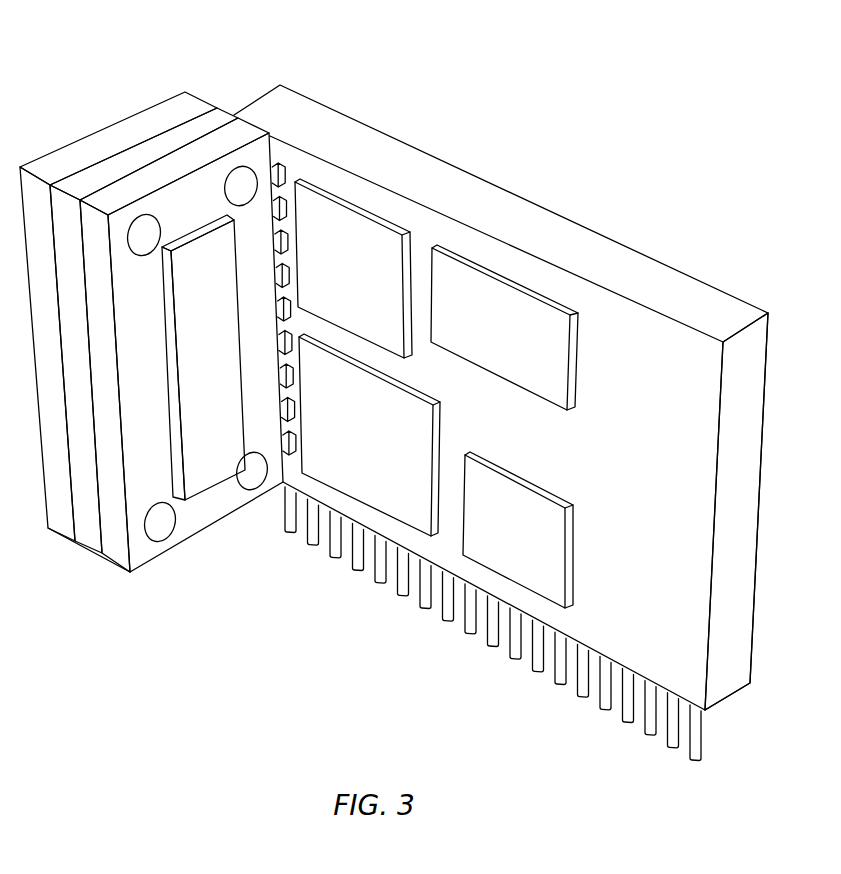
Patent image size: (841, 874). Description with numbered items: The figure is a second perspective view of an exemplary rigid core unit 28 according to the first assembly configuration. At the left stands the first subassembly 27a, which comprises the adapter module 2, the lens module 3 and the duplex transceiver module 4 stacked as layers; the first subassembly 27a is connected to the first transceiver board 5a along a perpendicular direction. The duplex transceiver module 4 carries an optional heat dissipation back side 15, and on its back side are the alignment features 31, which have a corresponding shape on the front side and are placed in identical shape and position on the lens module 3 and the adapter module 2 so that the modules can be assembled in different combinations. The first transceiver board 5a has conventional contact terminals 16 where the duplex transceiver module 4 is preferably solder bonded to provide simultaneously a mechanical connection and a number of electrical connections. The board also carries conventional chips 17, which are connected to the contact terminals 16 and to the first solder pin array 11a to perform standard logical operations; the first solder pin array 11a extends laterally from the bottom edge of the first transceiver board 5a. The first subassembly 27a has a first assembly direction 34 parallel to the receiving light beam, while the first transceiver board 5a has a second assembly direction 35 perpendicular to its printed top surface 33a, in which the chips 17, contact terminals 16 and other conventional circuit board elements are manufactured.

The adapter module 2 is at (190, 104).
The lens module 3 is at (216, 115).
The duplex transceiver module 4 is at (243, 133).
The alignment features 31 is at (155, 226).
The heat dissipation back side 15 is at (187, 349).
The contact terminals 16 is at (276, 179).
The first subassembly 27a is at (50, 531).
The first assembly direction 34 is at (0, 603).
The second assembly direction 35 is at (237, 722).
The rigid core unit 28 is at (704, 138).
The first transceiver board 5a is at (609, 253).
The printed top surface 33a is at (700, 515).
The chips 17 is at (562, 360).
The first solder pin array 11a is at (702, 767).